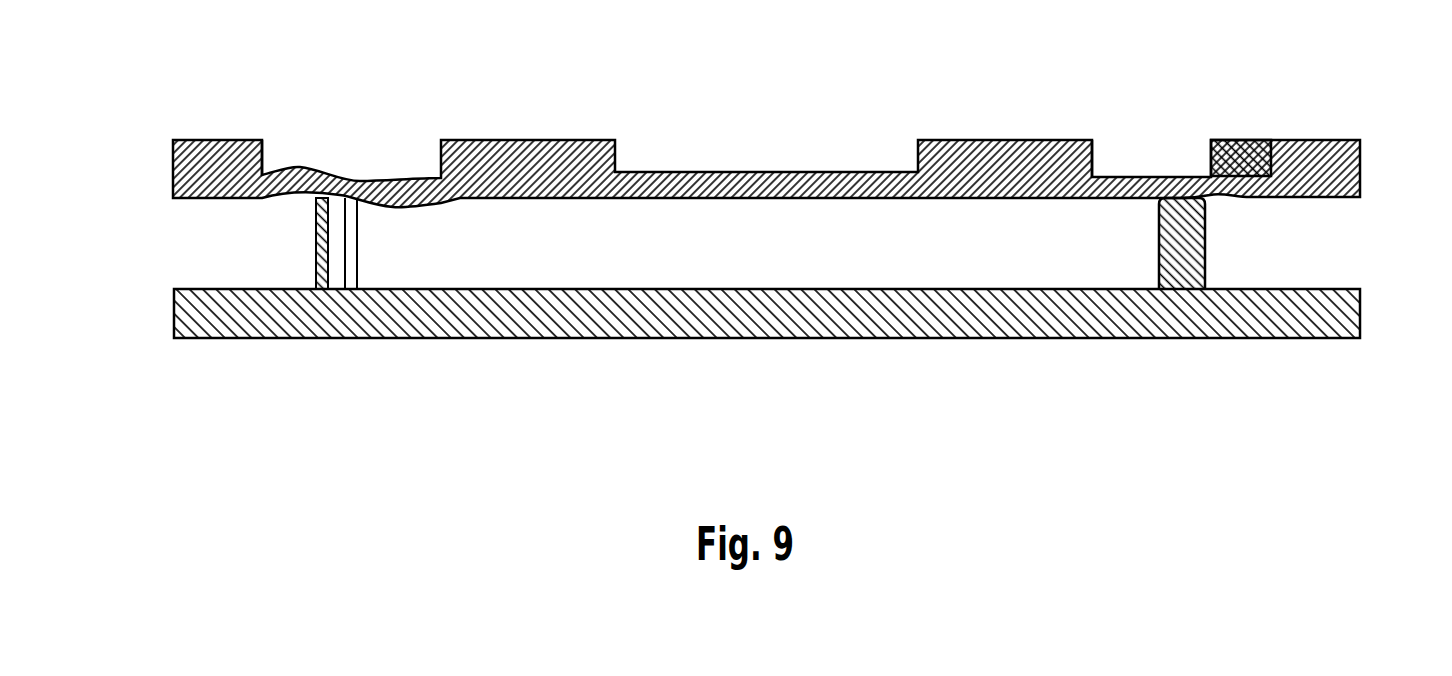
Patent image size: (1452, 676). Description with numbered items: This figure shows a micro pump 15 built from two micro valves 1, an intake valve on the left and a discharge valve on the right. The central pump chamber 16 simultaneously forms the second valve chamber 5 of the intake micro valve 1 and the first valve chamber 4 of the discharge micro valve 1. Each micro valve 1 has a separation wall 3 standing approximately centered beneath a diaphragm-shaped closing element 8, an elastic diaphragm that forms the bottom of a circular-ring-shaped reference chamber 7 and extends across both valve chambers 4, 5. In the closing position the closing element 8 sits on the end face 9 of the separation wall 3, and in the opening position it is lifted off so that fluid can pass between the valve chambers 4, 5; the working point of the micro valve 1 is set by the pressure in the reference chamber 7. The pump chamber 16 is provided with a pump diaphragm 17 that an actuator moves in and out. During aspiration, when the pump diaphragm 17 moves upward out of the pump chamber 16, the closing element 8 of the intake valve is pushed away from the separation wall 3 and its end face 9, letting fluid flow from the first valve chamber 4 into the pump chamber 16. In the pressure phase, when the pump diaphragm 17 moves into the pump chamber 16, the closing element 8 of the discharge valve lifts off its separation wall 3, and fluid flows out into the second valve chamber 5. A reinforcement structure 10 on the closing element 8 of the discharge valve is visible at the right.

The micro valve 1 is at (329, 366).
The separation wall 3 is at (322, 248).
The first valve chamber 4 is at (186, 230).
The second valve chamber 5 is at (1348, 230).
The reference chamber 7 is at (262, 157).
The closing element 8 is at (345, 187).
The end face 9 is at (320, 193).
The reinforcement structure 10 is at (1250, 172).
The micro pump 15 is at (745, 365).
The pump chamber 16 is at (729, 262).
The pump diaphragm 17 is at (737, 182).